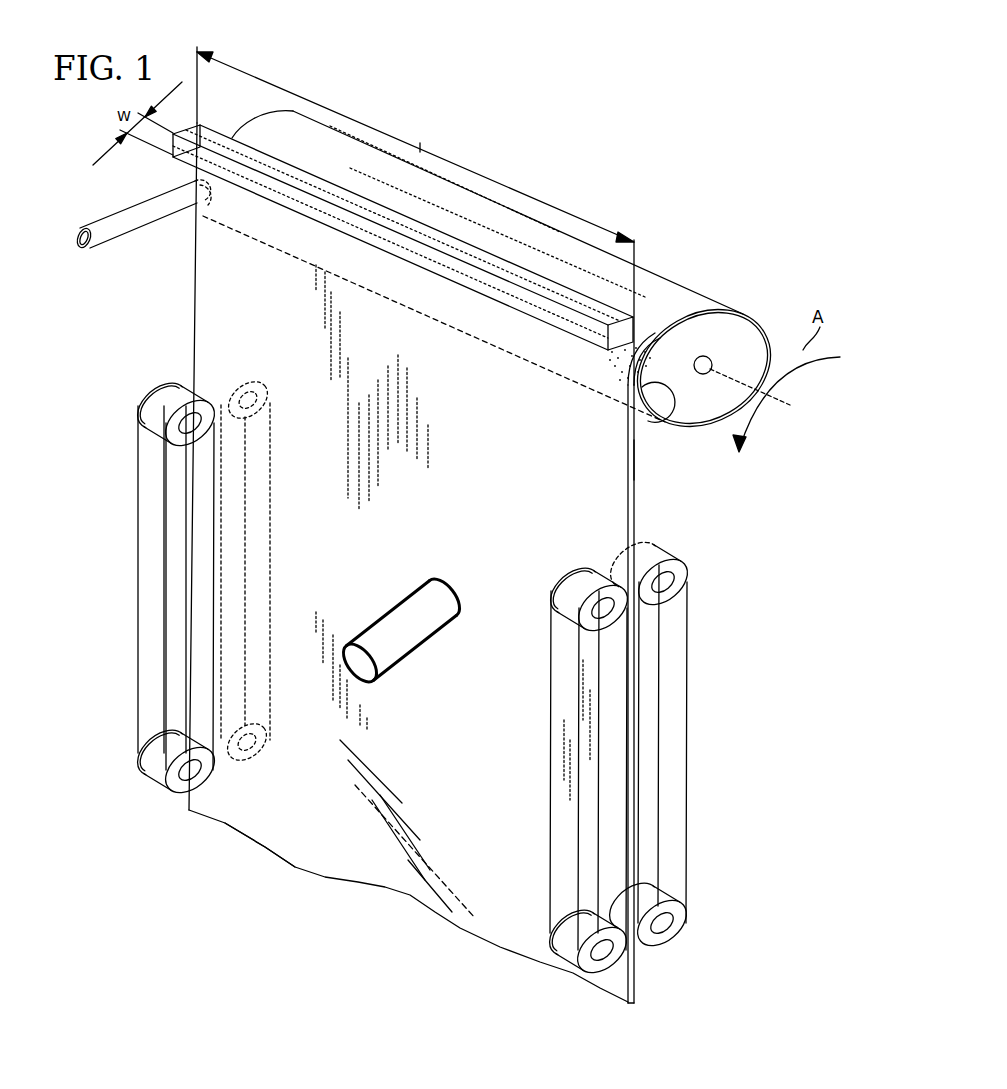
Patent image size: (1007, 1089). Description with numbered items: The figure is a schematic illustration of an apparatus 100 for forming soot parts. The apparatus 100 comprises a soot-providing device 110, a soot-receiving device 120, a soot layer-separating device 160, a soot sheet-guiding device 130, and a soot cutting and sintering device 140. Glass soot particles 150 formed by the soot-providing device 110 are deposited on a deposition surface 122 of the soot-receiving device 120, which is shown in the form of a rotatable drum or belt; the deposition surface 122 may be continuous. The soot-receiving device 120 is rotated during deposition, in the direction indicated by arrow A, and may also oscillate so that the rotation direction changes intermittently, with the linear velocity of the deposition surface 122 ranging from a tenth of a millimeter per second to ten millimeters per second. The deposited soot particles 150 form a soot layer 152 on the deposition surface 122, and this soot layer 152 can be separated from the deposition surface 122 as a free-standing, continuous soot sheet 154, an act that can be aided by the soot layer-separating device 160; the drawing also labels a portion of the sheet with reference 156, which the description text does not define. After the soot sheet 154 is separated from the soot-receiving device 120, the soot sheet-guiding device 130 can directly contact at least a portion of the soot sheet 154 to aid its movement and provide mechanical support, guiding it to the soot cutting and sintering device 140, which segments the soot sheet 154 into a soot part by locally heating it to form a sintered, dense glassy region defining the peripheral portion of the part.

The apparatus 100 is at (678, 151).
The soot-providing device 110 is at (195, 172).
The soot-receiving device 120 is at (692, 292).
The deposition surface 122 is at (643, 282).
The soot sheet-guiding device 130 is at (213, 360).
The soot cutting and sintering device 140 is at (398, 633).
The soot particles 150 is at (636, 358).
The soot layer 152 is at (658, 430).
The soot sheet 154 is at (640, 462).
The sheet bottom edge 156 is at (343, 847).
The soot layer-separating device 160 is at (132, 218).